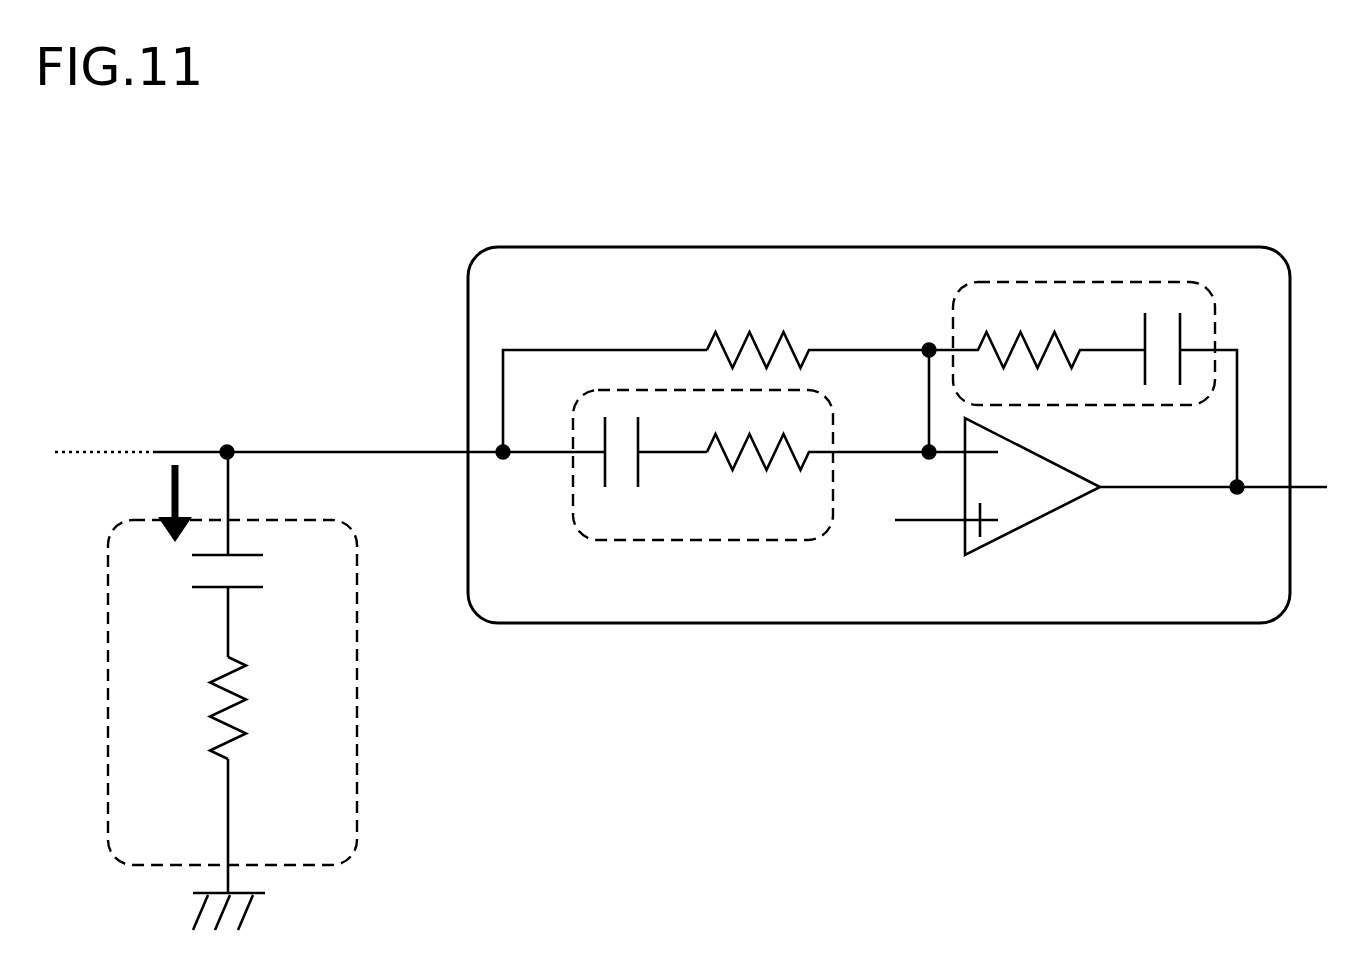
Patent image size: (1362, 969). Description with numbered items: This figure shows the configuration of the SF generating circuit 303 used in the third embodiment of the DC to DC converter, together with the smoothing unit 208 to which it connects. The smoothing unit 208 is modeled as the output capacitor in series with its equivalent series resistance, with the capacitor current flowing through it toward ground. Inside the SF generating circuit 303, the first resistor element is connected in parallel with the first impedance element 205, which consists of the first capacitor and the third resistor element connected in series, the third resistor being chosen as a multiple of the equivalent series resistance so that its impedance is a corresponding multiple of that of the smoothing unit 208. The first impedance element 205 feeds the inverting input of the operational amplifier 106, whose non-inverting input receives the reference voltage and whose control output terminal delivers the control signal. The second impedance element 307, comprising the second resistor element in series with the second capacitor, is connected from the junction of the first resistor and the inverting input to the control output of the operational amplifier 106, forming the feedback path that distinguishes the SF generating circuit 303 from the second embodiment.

The smoothing unit 208 is at (108, 810).
The SF generating circuit 303 is at (897, 467).
The first impedance element 205 is at (692, 540).
The second impedance element 307 is at (1160, 407).
The operational amplifier 106 is at (1013, 525).